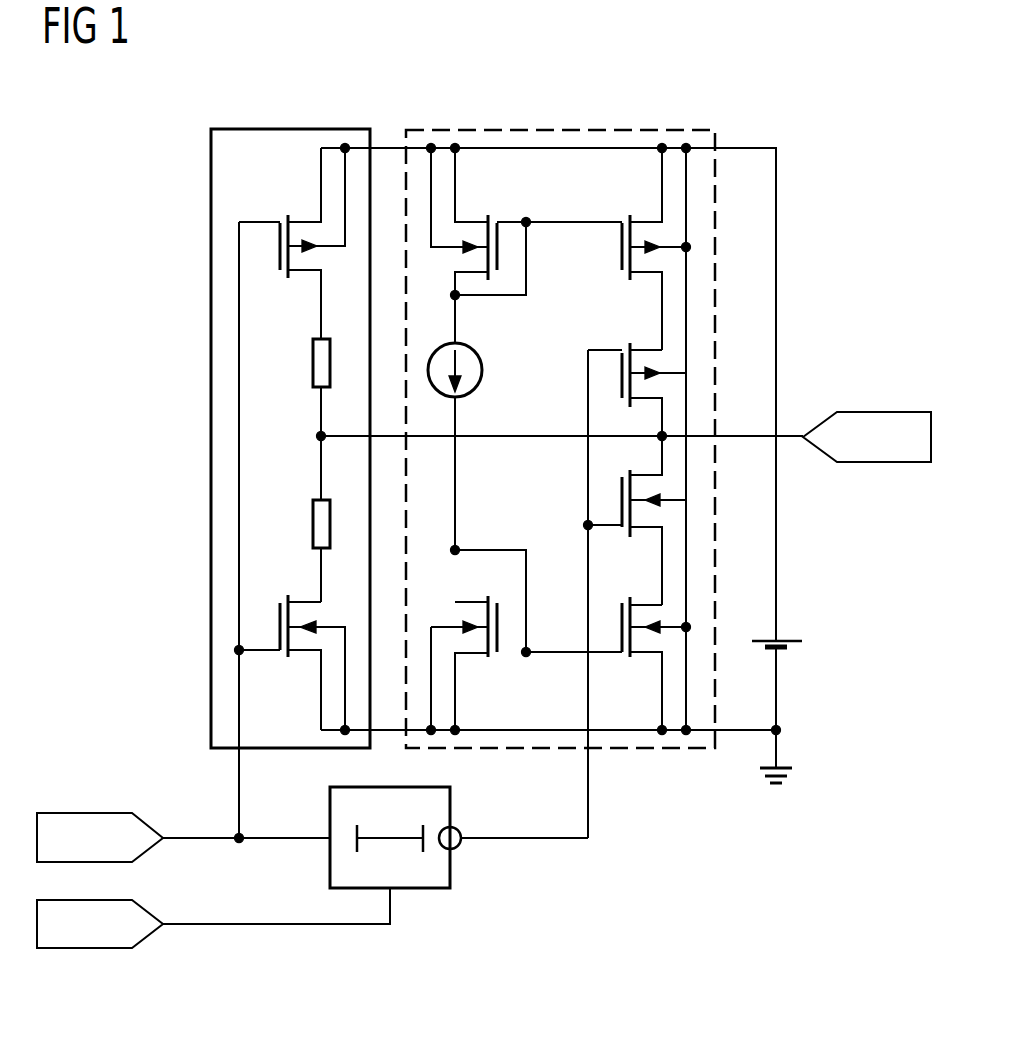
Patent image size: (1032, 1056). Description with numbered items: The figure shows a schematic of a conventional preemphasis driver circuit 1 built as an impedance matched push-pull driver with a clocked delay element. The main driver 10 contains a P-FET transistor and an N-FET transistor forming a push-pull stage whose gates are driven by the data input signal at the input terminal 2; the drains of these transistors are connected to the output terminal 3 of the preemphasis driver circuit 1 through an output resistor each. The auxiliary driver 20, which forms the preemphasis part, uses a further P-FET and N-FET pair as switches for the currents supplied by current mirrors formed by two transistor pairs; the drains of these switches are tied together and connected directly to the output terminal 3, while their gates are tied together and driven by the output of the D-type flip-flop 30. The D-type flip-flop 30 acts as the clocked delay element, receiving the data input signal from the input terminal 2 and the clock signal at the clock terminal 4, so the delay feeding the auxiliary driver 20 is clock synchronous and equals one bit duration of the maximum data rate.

The preemphasis driver circuit 1 is at (754, 120).
The input terminal 2 is at (83, 812).
The output terminal 3 is at (882, 411).
The clock terminal 4 is at (90, 950).
The main driver 10 is at (282, 127).
The auxiliary driver 20 is at (561, 128).
The D-type flip-flop 30 is at (420, 890).